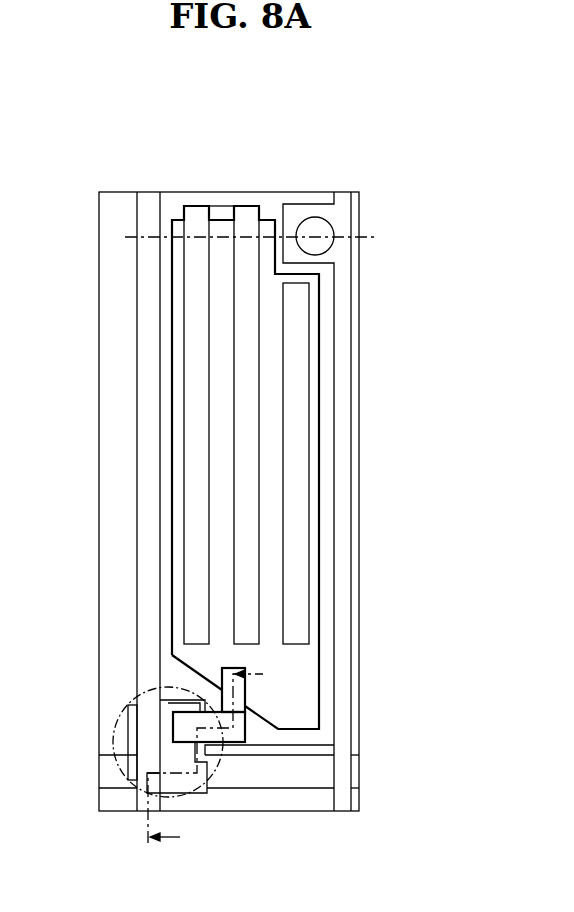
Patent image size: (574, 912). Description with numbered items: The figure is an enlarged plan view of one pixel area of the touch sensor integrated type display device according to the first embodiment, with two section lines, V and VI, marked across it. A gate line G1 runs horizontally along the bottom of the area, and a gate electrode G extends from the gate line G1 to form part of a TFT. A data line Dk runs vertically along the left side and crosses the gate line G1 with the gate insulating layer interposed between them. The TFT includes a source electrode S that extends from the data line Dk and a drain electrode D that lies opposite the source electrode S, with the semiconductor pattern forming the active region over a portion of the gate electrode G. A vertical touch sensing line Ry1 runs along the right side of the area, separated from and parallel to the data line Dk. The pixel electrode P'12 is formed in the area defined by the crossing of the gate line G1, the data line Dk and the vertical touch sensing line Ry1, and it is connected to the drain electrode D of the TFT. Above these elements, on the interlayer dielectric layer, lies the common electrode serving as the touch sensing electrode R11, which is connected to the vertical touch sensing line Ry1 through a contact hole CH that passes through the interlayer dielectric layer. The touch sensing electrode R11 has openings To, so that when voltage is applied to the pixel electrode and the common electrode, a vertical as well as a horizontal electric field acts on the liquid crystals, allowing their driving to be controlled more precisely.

The touch sensing electrode R11 is at (175, 121).
The pixel electrode P'12 is at (217, 185).
The contact hole CH is at (316, 223).
The vertical touch sensing line Ry1 is at (343, 323).
The openings To is at (298, 463).
The gate line G1 is at (355, 772).
The thin film transistor TFT is at (112, 740).
The drain electrode D is at (261, 737).
The source electrode S is at (206, 765).
The gate electrode G is at (218, 747).
The data line Dk is at (145, 806).
The section line VI-VI' VI is at (253, 238).
The section line V-V' V is at (216, 757).